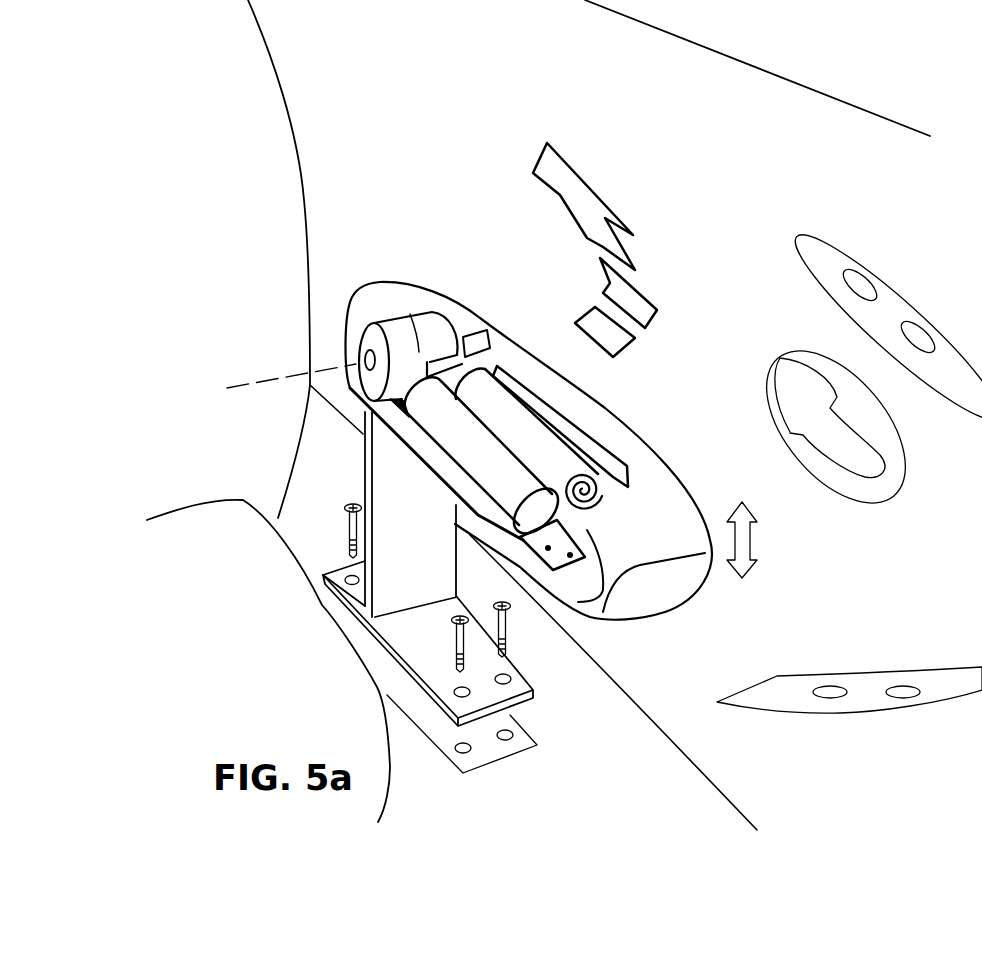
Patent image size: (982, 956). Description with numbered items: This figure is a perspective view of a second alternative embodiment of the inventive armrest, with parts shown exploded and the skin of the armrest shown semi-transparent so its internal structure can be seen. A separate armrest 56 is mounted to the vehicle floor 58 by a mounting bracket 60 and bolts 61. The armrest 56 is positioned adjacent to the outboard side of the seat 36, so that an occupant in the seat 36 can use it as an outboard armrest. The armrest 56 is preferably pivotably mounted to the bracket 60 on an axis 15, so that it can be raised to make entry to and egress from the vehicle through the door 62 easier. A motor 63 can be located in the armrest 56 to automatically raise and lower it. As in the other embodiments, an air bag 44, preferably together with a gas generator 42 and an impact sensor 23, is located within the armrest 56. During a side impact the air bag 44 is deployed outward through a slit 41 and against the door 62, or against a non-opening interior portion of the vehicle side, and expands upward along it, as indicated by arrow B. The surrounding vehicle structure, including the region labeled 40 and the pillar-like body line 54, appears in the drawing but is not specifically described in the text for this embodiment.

The axis 15 is at (263, 383).
The impact sensor 23 is at (473, 333).
The seat 36 is at (307, 676).
The vehicle body panel 40 is at (243, 277).
The slit 41 is at (618, 480).
The gas generator 42 is at (488, 456).
The air bag 44 is at (553, 458).
The door pillar 54 is at (279, 118).
The armrest 56 is at (633, 404).
The vehicle floor 58 is at (608, 787).
The mounting bracket 60 is at (428, 549).
The bolts 61 is at (348, 530).
The door 62 is at (835, 589).
The motor 63 is at (413, 322).
The arrow B is at (652, 316).